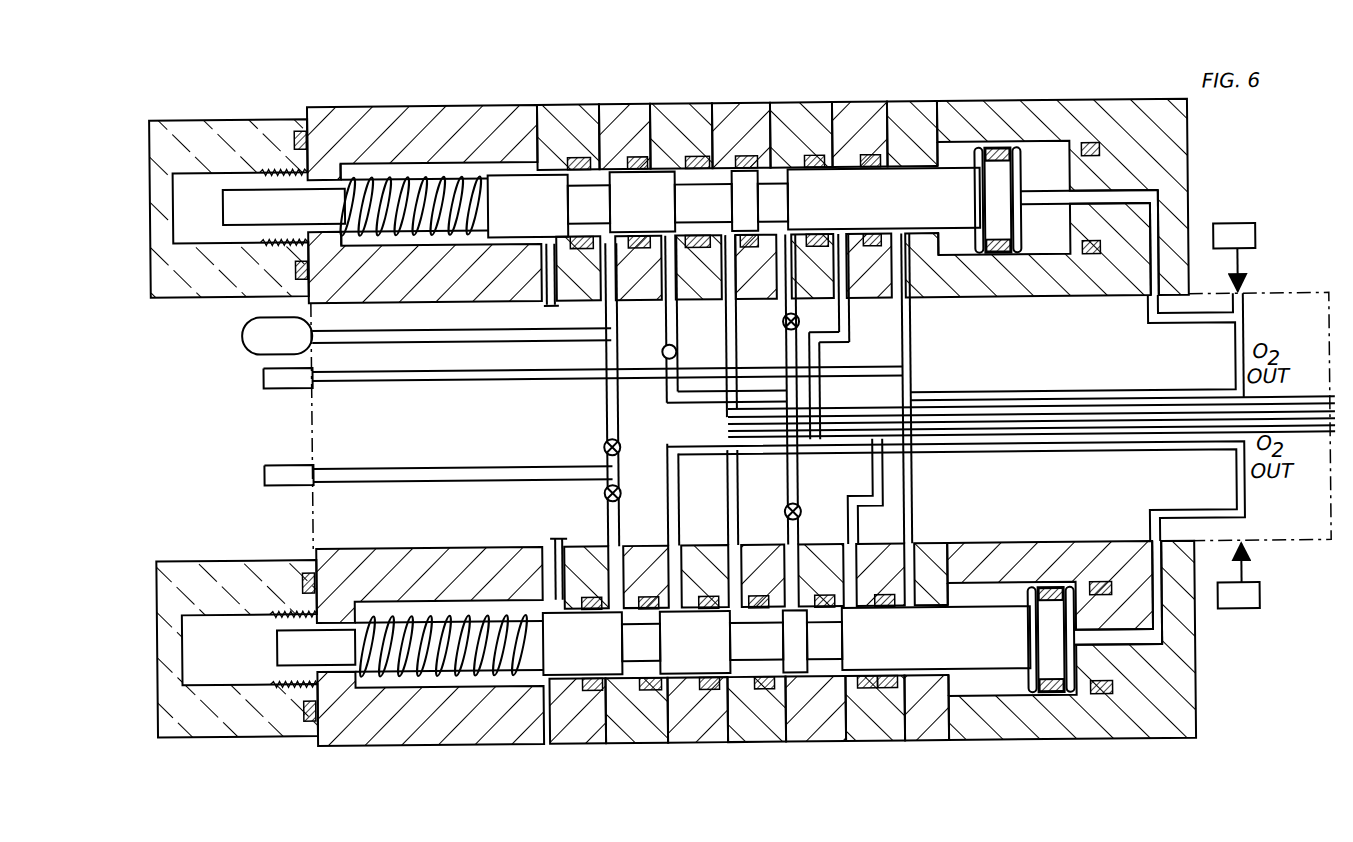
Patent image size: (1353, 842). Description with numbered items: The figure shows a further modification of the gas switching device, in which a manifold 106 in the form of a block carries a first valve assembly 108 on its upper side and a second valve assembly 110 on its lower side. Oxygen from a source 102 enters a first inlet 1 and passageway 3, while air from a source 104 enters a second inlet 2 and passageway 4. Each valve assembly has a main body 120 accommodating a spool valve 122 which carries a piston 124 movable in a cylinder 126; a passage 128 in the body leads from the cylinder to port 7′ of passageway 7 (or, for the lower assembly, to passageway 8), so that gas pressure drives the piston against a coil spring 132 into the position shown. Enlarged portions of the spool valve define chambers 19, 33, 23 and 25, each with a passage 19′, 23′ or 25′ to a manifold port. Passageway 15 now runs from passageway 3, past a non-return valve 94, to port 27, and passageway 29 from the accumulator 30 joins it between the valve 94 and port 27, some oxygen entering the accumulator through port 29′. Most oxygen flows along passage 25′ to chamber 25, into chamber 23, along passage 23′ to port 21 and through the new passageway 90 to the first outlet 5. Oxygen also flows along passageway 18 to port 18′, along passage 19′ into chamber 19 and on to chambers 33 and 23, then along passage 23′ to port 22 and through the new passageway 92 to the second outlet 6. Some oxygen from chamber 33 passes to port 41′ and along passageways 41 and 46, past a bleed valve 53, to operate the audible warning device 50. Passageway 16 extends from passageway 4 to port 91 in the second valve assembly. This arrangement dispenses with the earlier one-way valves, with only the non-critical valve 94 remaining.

The first inlet 1 is at (1248, 298).
The second inlet 2 is at (1245, 546).
The passageway 3 is at (1234, 349).
The passageway 4 is at (1244, 500).
The first outlet 5 is at (1318, 402).
The second outlet 6 is at (1320, 452).
The passageway 7 is at (1198, 334).
The port 7′ is at (1148, 304).
The passageway 8 is at (1205, 514).
The passageway 15 is at (1095, 394).
The passageway 16 is at (1150, 451).
The passageway 18 is at (912, 481).
The port 18′ is at (890, 530).
The chamber 19 is at (850, 612).
The passage 19′ is at (926, 616).
The port 21 is at (794, 337).
The port 22 is at (752, 532).
The chamber 23 is at (746, 230).
The passage 23′ is at (705, 614).
The chamber 25 is at (690, 232).
The passage 25′ is at (690, 350).
The port 27 is at (698, 355).
The passageway 29 is at (430, 340).
The port 29′ is at (316, 330).
The accumulator 30 is at (248, 340).
The chamber 33 is at (855, 613).
The passageway 41 is at (798, 480).
The port 41′ is at (800, 542).
The passageway 46 is at (552, 383).
The audible warning device 50 is at (266, 388).
The bleed valve 53 is at (800, 512).
The passageway 90 is at (1126, 402).
The port 91 is at (668, 536).
The passageway 92 is at (1090, 447).
The non-return valve 94 is at (662, 352).
The source 102 is at (1257, 241).
The source 104 is at (1252, 615).
The manifold 106 is at (1311, 298).
The first valve assembly 108 is at (832, 96).
The second valve assembly 110 is at (768, 752).
The main body 120 is at (676, 108).
The spool valve 122 is at (905, 184).
The piston 124 is at (1002, 166).
The cylinder 126 is at (1043, 164).
The passage 128 is at (1155, 233).
The coil spring 132 is at (440, 176).